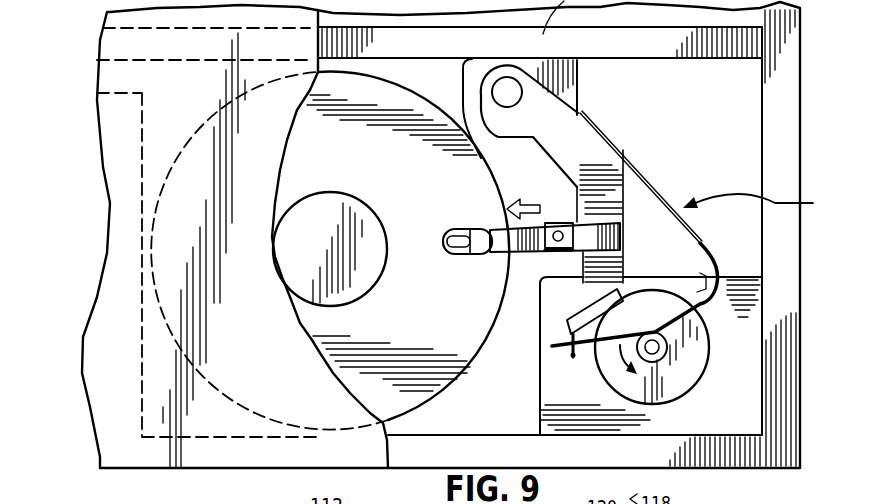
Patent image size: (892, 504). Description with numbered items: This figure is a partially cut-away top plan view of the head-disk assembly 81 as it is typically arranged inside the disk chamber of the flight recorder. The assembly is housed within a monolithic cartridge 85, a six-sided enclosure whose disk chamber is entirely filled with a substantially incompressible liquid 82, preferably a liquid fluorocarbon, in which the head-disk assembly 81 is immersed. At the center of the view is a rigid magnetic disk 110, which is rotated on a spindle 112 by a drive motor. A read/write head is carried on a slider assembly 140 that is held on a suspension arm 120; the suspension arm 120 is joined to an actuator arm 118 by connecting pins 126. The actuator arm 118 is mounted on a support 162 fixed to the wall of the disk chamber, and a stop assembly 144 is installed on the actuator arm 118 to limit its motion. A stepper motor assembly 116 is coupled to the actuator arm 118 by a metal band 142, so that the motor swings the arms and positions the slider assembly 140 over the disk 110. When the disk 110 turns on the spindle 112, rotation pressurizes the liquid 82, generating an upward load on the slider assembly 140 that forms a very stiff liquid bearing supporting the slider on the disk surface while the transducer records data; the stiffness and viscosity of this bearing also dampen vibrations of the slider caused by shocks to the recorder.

The head-disk assembly 81 is at (760, 205).
The liquid 82 is at (720, 121).
The monolithic cartridge 85 is at (787, 135).
The rigid magnetic disk 110 is at (438, 365).
The spindle 112 is at (318, 207).
The stepper motor assembly 116 is at (700, 360).
The actuator arm 118 is at (600, 155).
The suspension arm 120 is at (518, 253).
The connecting pins 126 is at (560, 230).
The slider assembly 140 is at (446, 234).
The metal band 142 is at (613, 333).
The stop assembly 144 is at (552, 347).
The support 162 is at (578, 84).